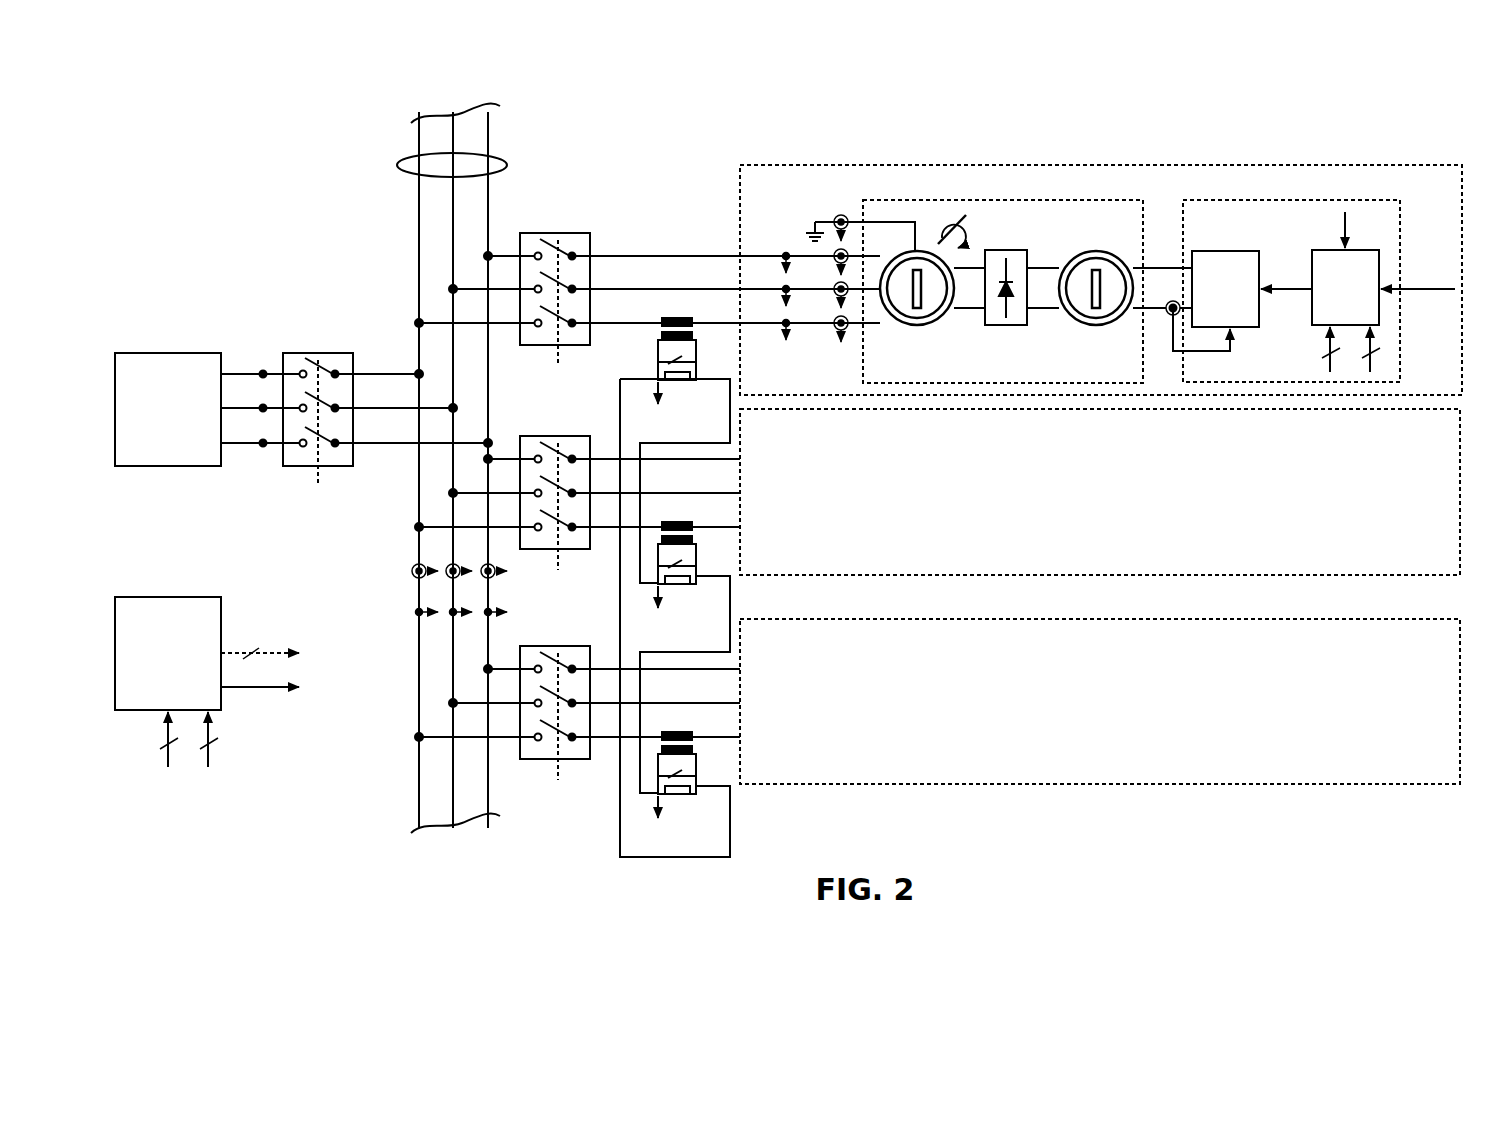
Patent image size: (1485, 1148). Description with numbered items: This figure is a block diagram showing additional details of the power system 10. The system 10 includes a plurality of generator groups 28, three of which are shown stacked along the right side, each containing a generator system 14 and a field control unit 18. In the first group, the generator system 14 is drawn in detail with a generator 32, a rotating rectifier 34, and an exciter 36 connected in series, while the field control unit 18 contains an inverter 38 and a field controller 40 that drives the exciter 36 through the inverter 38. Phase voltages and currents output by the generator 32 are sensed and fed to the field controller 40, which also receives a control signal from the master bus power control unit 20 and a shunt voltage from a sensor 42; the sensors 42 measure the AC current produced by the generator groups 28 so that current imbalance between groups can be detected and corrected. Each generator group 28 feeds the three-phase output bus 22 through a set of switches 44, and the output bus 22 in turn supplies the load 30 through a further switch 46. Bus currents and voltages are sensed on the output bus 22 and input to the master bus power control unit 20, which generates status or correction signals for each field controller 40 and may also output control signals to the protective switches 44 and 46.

The system 10 is at (243, 146).
The output bus 22 is at (507, 166).
The load 30 is at (168, 353).
The switch 46 is at (313, 353).
The master bus power control unit 20 is at (170, 597).
The switches 44 is at (552, 233).
The sensor 42 is at (697, 357).
The generator group 28 is at (995, 166).
The generator system 14 is at (884, 200).
The generator 32 is at (922, 325).
The rotating rectifier 34 is at (1010, 325).
The exciter 36 is at (1080, 325).
The field control unit 18 is at (1229, 200).
The inverter 38 is at (1216, 251).
The field controller 40 is at (1322, 250).